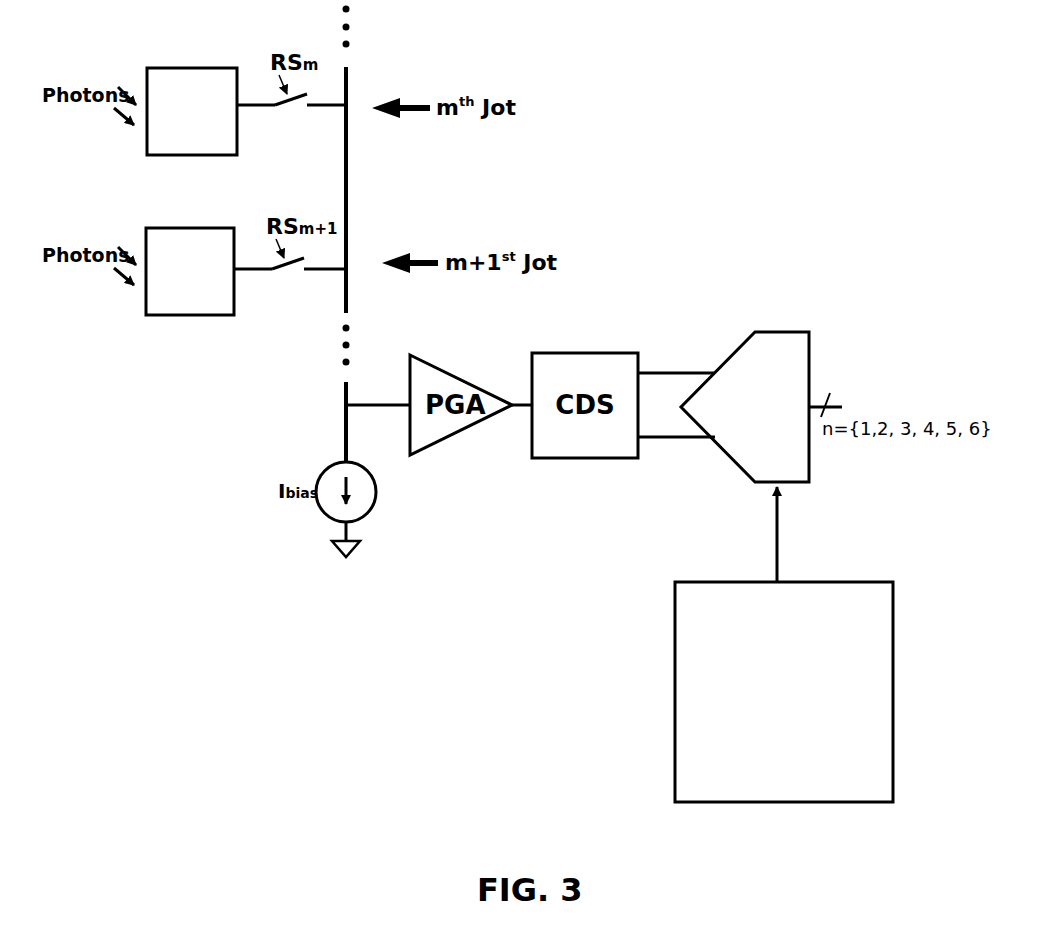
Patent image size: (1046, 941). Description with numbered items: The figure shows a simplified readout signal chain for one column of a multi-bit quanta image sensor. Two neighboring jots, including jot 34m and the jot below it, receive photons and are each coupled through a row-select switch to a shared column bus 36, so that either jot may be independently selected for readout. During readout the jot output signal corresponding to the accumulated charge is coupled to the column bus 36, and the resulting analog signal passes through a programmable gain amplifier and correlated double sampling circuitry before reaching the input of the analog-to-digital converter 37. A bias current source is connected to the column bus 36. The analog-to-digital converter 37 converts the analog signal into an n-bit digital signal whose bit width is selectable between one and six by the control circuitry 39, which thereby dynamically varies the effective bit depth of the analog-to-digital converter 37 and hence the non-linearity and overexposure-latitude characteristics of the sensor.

The jot 34m is at (208, 136).
The column bus 36 is at (352, 232).
The ADC 37 is at (776, 435).
The control circuitry 39 is at (769, 742).